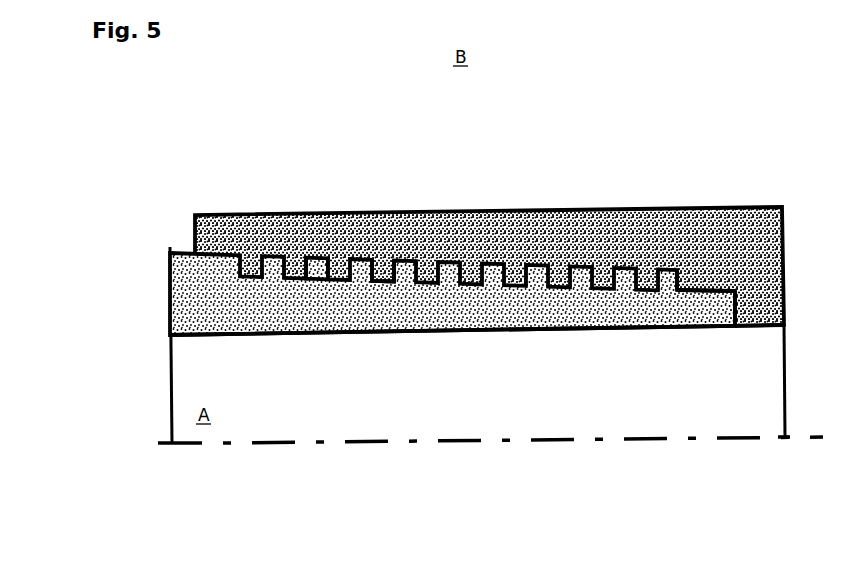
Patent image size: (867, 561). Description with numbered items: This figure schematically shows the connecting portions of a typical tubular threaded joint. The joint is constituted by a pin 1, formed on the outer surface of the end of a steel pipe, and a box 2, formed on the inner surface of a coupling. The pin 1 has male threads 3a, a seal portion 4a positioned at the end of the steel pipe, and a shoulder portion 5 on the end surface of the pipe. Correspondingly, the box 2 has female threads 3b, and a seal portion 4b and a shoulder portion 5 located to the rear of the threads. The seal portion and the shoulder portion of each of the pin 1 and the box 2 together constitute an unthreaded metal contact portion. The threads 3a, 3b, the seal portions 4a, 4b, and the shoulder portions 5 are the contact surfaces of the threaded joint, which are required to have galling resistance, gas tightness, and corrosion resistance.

The pin 1 is at (157, 298).
The box 2 is at (613, 172).
The male threads 3a is at (322, 250).
The female threads 3b is at (380, 282).
The seal portion 4a is at (692, 286).
The seal portion 4b is at (712, 288).
The shoulder portion 5 is at (735, 303).